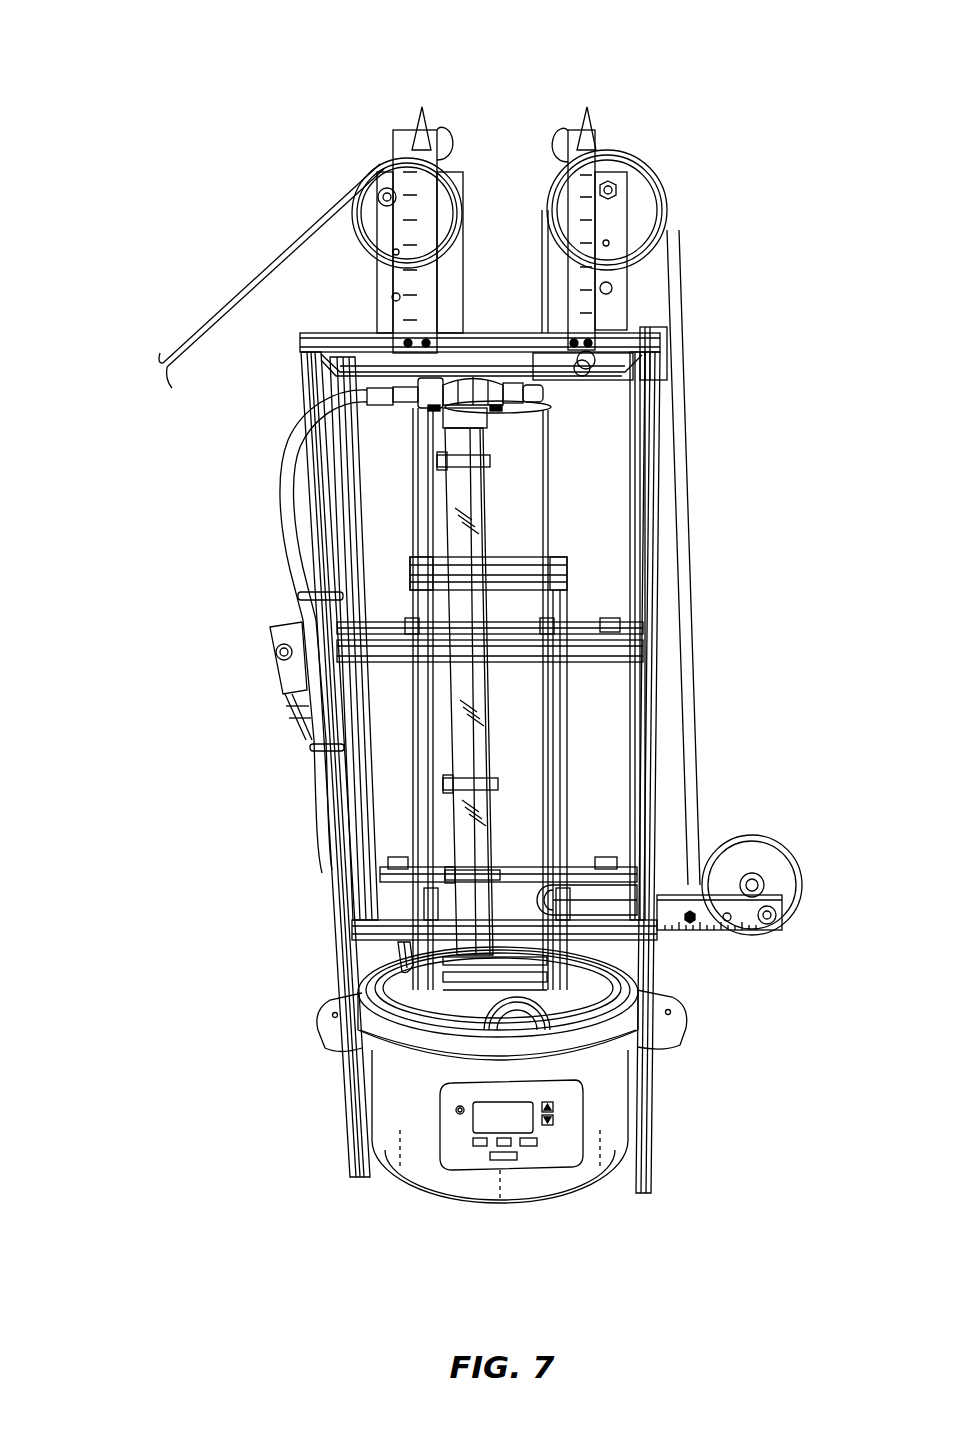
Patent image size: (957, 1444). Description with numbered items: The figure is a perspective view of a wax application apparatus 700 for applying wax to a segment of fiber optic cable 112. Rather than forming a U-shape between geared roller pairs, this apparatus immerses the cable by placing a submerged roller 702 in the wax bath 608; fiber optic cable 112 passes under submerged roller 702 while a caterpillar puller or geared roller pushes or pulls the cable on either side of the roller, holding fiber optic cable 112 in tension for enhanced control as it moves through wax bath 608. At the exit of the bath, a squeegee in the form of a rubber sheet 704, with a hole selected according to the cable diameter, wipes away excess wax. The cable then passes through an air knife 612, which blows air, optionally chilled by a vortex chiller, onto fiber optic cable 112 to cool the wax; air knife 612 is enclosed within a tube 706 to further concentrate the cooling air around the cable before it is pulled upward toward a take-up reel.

The wax application apparatus 700 is at (99, 138).
The fiber optic cable 112 is at (253, 283).
The air knife 612 is at (553, 392).
The tube 706 is at (487, 842).
The rubber sheet 704 is at (403, 960).
The submerged roller 702 is at (523, 1032).
The wax bath 608 is at (345, 1200).